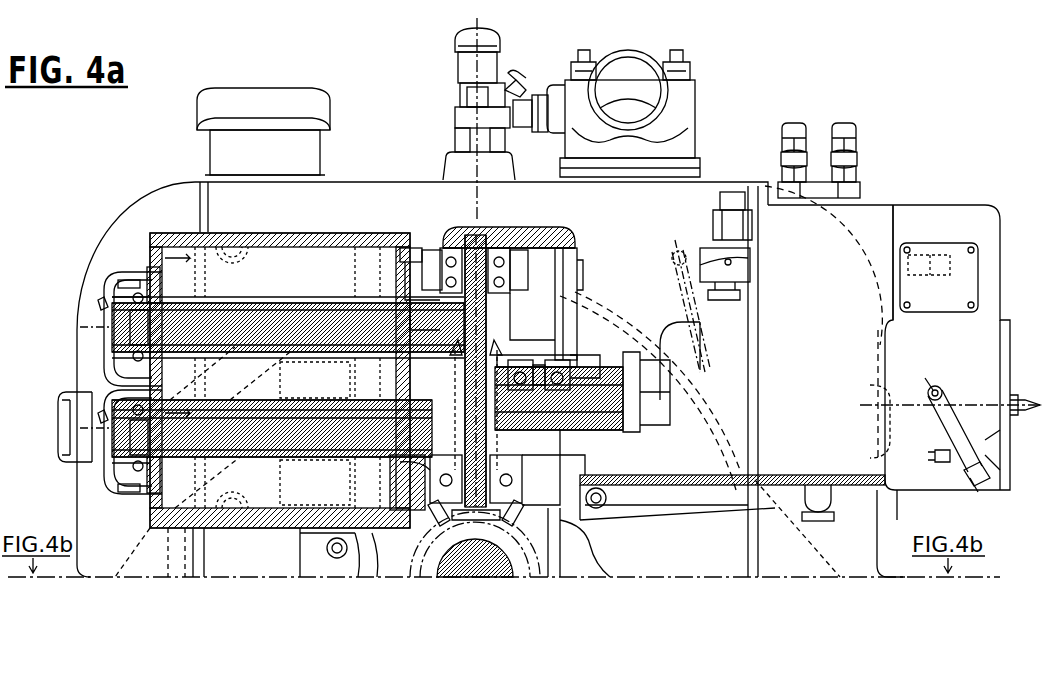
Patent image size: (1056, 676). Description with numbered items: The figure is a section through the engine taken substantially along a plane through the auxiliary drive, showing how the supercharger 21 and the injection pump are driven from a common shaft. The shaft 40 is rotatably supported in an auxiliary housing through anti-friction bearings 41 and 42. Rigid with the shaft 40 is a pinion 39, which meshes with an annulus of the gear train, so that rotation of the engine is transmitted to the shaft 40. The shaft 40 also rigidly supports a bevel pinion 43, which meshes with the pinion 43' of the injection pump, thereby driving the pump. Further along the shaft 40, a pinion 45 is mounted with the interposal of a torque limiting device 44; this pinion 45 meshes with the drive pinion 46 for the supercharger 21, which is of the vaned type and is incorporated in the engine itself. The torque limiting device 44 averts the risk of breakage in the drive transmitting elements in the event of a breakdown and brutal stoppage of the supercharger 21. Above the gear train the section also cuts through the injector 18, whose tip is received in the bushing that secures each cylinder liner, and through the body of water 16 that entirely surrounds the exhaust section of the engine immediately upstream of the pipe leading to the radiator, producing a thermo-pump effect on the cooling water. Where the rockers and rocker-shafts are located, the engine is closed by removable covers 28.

The body of water 16 is at (628, 110).
The injector 18 is at (470, 64).
The supercharger 21 is at (320, 286).
The removable covers 28 is at (105, 256).
The pinion 39 is at (432, 518).
The shaft 40 is at (513, 363).
The anti-friction bearing 41 is at (587, 522).
The anti-friction bearing 42 is at (443, 242).
The bevel pinion 43 is at (443, 482).
The pinion of the injection pump 43' is at (591, 338).
The torque limiting device 44 is at (503, 353).
The pinion 45 is at (503, 318).
The drive pinion 46 is at (413, 260).